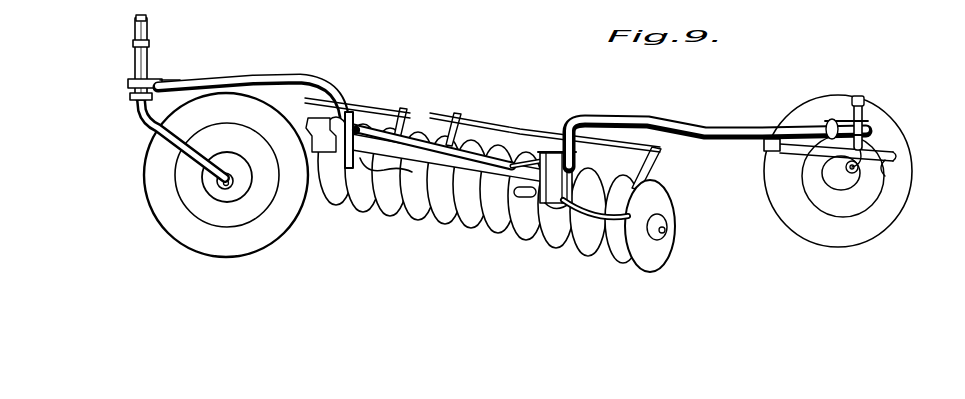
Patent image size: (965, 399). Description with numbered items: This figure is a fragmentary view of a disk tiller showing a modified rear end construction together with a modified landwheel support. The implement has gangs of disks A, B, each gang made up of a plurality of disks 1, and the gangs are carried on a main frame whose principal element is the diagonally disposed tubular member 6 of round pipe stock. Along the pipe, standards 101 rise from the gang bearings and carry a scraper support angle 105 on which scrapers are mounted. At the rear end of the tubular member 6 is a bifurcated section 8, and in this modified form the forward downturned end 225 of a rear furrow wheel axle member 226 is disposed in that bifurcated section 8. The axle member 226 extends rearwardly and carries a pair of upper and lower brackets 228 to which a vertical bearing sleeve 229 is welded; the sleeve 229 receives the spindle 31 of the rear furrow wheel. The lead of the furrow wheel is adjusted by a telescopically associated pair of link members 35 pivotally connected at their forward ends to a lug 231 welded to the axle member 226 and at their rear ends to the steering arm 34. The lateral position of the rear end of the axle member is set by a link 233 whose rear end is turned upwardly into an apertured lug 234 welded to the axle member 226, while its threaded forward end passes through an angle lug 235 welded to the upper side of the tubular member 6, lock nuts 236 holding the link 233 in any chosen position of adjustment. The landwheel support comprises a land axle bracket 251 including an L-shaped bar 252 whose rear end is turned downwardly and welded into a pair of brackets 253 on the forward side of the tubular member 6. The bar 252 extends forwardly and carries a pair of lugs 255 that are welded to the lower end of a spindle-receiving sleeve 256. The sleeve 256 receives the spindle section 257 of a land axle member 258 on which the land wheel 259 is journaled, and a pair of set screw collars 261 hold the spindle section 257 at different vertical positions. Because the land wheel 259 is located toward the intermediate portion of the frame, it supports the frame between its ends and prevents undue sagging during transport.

The disks 1 is at (503, 231).
The tubular member 6 is at (440, 166).
The bifurcated section 8 is at (556, 207).
The rear furrow wheel axle 31 is at (861, 98).
The steering arm 34 is at (885, 175).
The adjusting link 35 is at (812, 162).
The standard 101 is at (446, 132).
The scraper support angle 105 is at (312, 100).
The forward downturned end 225 is at (582, 176).
The rear furrow wheel axle member 226 is at (690, 116).
The upper and lower brackets 228 is at (832, 120).
The vertical bearing sleeve 229 is at (866, 106).
The lug 231 is at (766, 145).
The link 233 is at (465, 153).
The lug 234 is at (546, 158).
The angle lug 235 is at (361, 129).
The lock nuts 236 is at (350, 113).
The land axle bracket 251 is at (127, 83).
The L-shaped bar 252 is at (250, 76).
The brackets 253 is at (319, 131).
The lugs 255 is at (157, 80).
The spindle-receiving sleeve 256 is at (135, 55).
The spindle section 257 is at (148, 22).
The land axle member 258 is at (150, 137).
The land wheel 259 is at (153, 197).
The set screw collars 261 is at (150, 43).
The gang of disks A is at (492, 262).
The gang of disks B is at (362, 215).